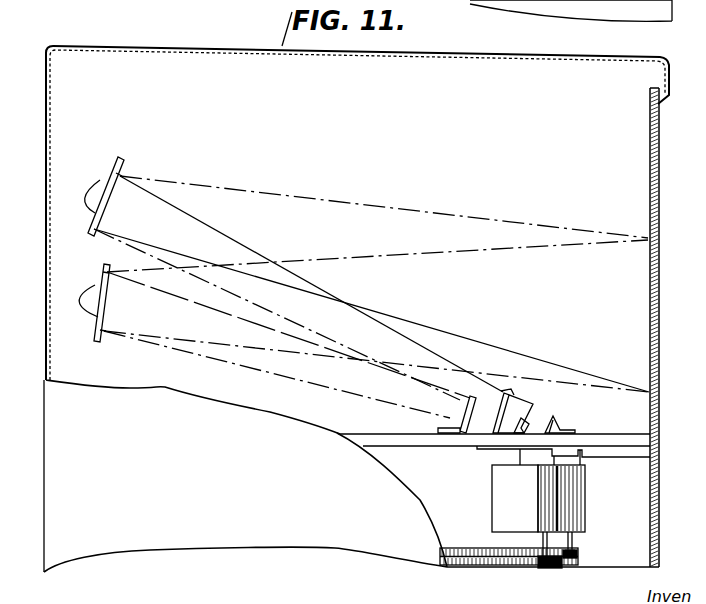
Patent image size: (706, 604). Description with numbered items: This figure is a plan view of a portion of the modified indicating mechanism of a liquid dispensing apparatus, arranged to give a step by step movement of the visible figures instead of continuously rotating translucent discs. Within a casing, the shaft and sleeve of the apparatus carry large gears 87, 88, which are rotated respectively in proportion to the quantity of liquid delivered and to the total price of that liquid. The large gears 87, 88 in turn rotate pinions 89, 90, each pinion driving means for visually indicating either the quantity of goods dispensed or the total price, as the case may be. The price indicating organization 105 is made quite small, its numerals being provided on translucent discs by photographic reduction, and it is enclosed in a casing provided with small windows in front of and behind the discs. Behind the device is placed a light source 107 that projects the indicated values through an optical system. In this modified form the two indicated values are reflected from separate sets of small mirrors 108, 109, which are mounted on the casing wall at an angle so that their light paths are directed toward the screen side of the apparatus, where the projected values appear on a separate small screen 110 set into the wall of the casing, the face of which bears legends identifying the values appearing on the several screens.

The large gear 87 is at (468, 566).
The large gear 88 is at (455, 548).
The pinion 89 is at (545, 568).
The pinion 90 is at (578, 556).
The total price indicating organization 105 is at (477, 452).
The light source 107 is at (496, 489).
The small mirrors 108 is at (98, 299).
The small mirrors 109 is at (104, 182).
The small screen 110 is at (661, 293).